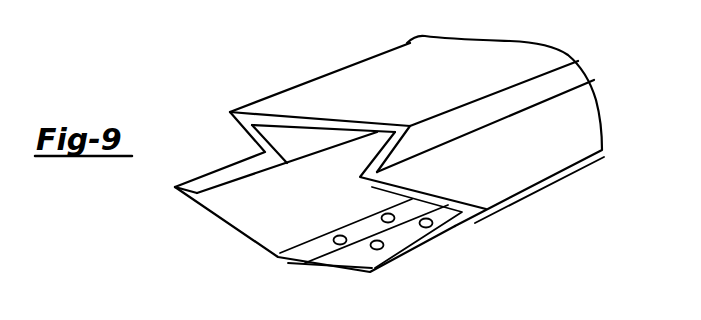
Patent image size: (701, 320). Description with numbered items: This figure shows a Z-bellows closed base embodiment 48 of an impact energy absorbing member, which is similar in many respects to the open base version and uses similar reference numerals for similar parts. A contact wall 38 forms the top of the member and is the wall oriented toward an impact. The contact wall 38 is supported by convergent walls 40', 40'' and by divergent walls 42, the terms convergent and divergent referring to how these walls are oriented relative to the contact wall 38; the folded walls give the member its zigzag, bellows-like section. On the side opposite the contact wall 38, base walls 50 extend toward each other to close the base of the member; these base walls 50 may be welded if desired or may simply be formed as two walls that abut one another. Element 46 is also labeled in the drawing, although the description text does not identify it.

The contact wall 38 is at (398, 72).
The convergent wall 40' is at (421, 104).
The convergent wall 40'' is at (290, 248).
The divergent walls 42 is at (236, 164).
The bottom flange 46 is at (289, 250).
The Z-bellows closed base embodiment 48 is at (322, 66).
The base walls 50 is at (360, 253).